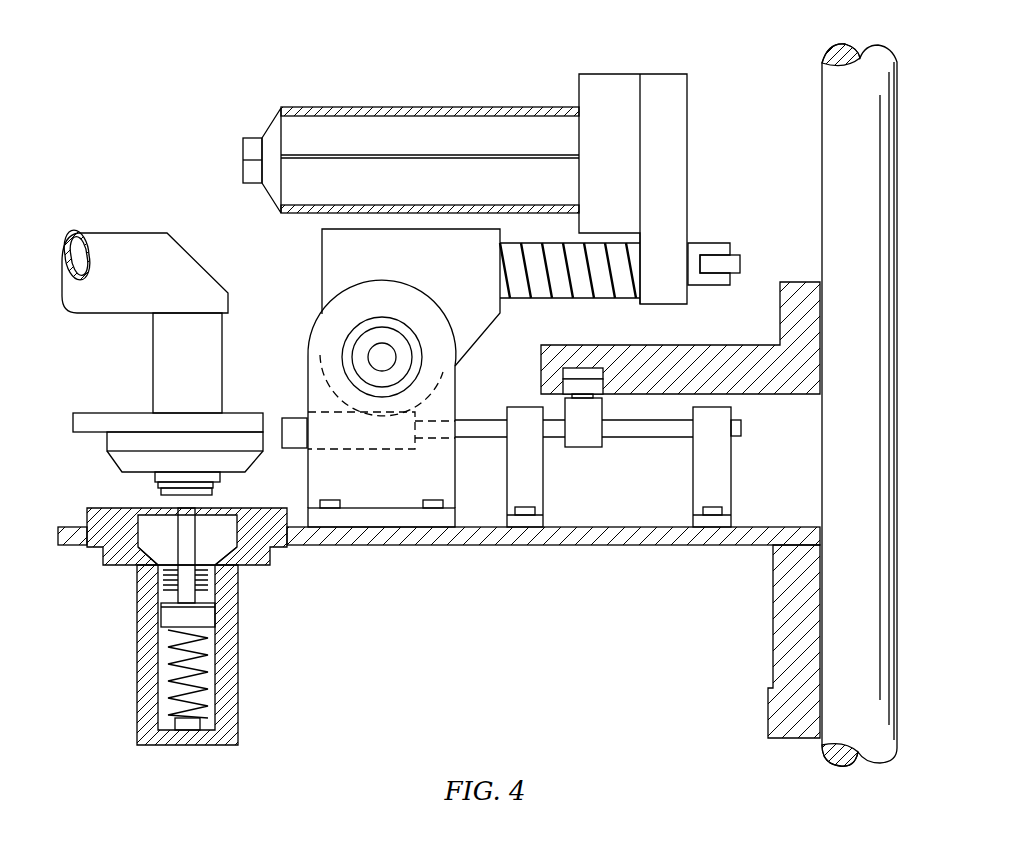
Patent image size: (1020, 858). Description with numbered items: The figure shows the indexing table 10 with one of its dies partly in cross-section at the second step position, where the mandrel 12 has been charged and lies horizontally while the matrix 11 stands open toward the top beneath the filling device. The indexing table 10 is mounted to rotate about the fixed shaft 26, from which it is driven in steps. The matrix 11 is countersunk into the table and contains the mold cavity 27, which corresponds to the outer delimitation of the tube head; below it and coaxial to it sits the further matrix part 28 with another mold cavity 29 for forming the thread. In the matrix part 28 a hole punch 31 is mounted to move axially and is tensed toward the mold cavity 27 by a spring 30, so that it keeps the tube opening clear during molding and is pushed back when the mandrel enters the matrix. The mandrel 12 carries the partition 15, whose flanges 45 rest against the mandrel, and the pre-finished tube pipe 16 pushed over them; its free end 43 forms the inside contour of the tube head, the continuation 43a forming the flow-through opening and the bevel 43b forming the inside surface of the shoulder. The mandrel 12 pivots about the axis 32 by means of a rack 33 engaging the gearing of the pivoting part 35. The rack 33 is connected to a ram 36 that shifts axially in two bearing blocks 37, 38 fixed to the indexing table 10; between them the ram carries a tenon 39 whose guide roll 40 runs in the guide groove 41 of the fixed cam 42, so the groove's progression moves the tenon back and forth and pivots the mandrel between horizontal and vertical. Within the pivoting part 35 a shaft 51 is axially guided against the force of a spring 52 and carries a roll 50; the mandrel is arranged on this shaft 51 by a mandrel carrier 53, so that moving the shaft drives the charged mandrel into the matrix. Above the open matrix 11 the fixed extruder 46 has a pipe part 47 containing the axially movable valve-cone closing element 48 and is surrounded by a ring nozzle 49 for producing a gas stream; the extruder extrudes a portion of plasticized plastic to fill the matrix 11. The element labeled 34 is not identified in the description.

The indexing table 10 is at (365, 546).
The matrix 11 is at (115, 552).
The mandrel 12 is at (430, 127).
The partition 15 is at (248, 162).
The tube pipe 16 is at (410, 108).
The fixed shaft 26 is at (830, 92).
The mold cavity 27 is at (158, 553).
The matrix part 28 is at (140, 705).
The mold cavity 29 is at (205, 578).
The spring 30 is at (205, 710).
The hole punch 31 is at (190, 598).
The axis 32 is at (383, 343).
The rack 33 is at (350, 440).
The shaft end 34 is at (290, 416).
The pivoting part 35 is at (333, 265).
The ram 36 is at (650, 438).
The bearing block 37 is at (530, 528).
The bearing block 38 is at (712, 528).
The tenon 39 is at (578, 447).
The guide roll 40 is at (578, 386).
The guide groove 41 is at (594, 372).
The cam 42 is at (718, 350).
The free end 43 is at (237, 140).
The continuation 43a is at (252, 148).
The bevel 43b is at (272, 137).
The flanges 45 is at (494, 153).
The extruder 46 is at (98, 248).
The pipe part 47 is at (153, 375).
The closing element 48 is at (213, 490).
The ring nozzle 49 is at (155, 478).
The roll 50 is at (742, 264).
The shaft 51 is at (635, 258).
The spring 52 is at (527, 300).
The mandrel carrier 53 is at (652, 85).